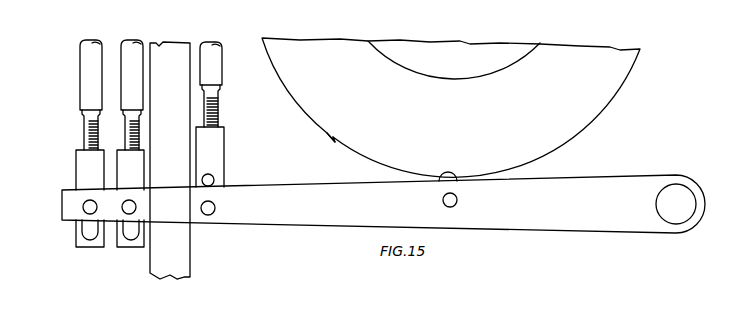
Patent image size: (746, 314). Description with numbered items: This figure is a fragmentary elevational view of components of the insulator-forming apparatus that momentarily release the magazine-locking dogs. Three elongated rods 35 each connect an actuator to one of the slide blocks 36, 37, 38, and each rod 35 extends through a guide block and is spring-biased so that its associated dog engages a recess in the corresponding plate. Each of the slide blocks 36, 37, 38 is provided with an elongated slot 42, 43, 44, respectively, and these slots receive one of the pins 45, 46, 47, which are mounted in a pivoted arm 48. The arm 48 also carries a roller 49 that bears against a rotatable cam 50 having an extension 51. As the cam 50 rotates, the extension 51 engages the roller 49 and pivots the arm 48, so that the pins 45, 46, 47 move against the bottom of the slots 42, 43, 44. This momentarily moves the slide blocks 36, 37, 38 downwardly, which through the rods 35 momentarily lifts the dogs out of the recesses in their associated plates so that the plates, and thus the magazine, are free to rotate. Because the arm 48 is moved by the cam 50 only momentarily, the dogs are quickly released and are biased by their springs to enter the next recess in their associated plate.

The elongated rod 35 is at (128, 82).
The slide block 36 is at (76, 172).
The slide block 37 is at (118, 250).
The slide block 38 is at (218, 150).
The elongated slot 42 is at (90, 237).
The elongated slot 43 is at (130, 238).
The elongated slot 44 is at (212, 180).
The pin 45 is at (83, 207).
The pin 46 is at (136, 207).
The pin 47 is at (215, 208).
The pivoted arm 48 is at (533, 233).
The roller 49 is at (462, 178).
The rotatable cam 50 is at (614, 90).
The extension 51 is at (337, 137).